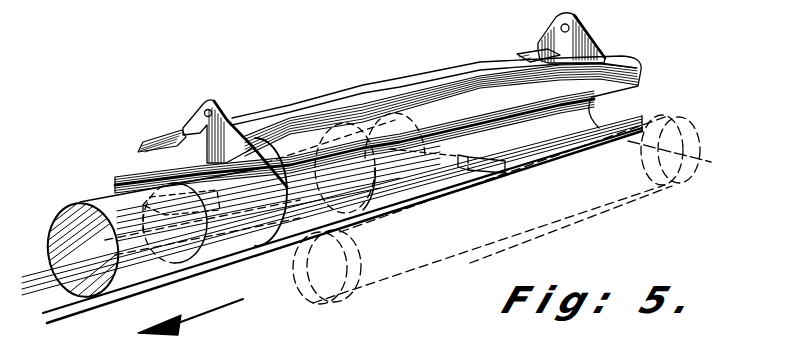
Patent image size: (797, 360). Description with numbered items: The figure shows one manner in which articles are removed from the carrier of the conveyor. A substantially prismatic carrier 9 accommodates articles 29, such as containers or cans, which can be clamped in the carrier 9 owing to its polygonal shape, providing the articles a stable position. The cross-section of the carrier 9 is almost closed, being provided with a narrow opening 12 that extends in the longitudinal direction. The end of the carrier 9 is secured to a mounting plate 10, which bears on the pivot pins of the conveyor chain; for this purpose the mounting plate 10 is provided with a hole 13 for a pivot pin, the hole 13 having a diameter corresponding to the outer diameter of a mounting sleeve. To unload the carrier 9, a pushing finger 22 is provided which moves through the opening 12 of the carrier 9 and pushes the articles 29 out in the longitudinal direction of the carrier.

The carrier 9 is at (508, 88).
The mounting plate 10 is at (385, 104).
The opening 12 is at (636, 103).
The hole 13 is at (210, 100).
The pushing finger 22 is at (462, 158).
The article 29 is at (118, 195).